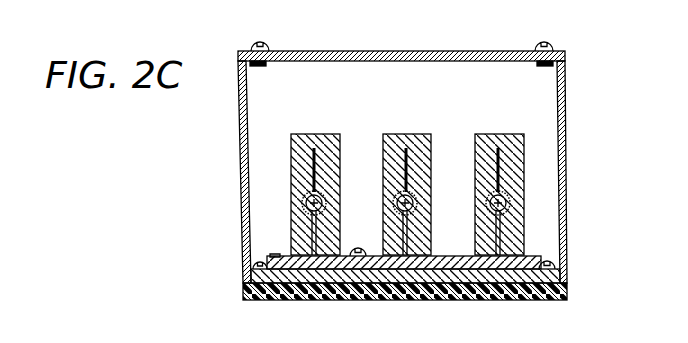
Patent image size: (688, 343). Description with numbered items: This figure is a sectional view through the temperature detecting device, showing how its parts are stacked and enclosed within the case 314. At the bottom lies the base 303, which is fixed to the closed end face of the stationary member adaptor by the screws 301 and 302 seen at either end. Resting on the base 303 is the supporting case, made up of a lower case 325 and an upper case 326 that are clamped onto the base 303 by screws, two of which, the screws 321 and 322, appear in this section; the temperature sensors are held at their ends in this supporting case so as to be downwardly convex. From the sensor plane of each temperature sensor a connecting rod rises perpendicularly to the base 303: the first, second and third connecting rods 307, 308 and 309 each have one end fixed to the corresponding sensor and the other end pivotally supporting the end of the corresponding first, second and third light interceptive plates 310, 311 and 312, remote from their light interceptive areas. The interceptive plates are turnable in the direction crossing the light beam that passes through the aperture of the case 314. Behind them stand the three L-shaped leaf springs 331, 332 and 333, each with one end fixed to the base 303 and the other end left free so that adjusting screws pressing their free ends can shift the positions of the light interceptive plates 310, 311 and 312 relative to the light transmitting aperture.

The case 314 is at (430, 51).
The first L-shaped leaf spring 331 is at (317, 134).
The second L-shaped leaf spring 332 is at (405, 134).
The third L-shaped leaf spring 333 is at (505, 134).
The first light interceptive plate 310 is at (312, 158).
The second light interceptive plate 311 is at (403, 160).
The third light interceptive plate 312 is at (496, 152).
The first connecting rod 307 is at (303, 220).
The second connecting rod 308 is at (402, 222).
The third connecting rod 309 is at (491, 222).
The upper case 326 is at (275, 254).
The screw 322 is at (359, 248).
The screw 321 is at (453, 256).
The screw 301 is at (548, 264).
The screw 302 is at (253, 268).
The lower case 325 is at (315, 283).
The base 303 is at (430, 300).